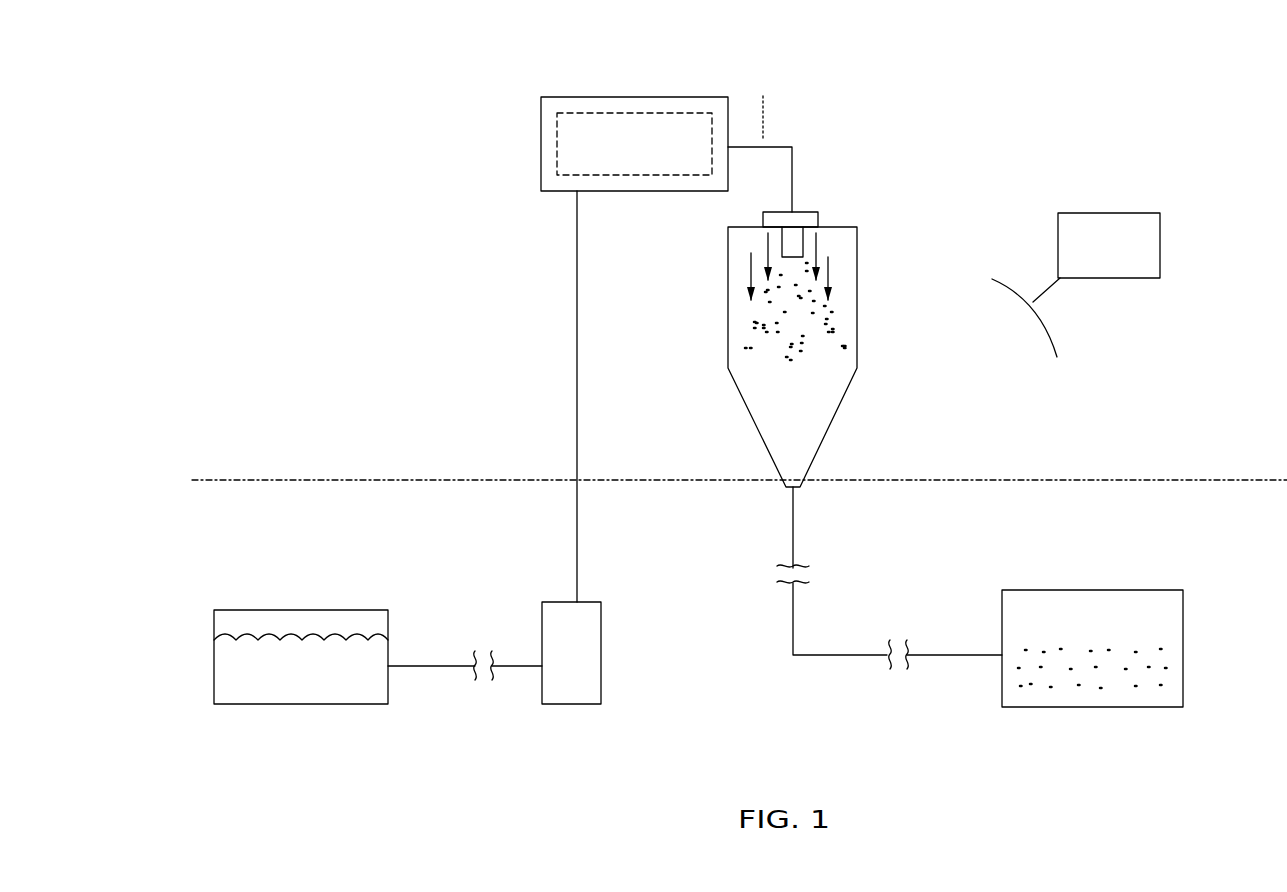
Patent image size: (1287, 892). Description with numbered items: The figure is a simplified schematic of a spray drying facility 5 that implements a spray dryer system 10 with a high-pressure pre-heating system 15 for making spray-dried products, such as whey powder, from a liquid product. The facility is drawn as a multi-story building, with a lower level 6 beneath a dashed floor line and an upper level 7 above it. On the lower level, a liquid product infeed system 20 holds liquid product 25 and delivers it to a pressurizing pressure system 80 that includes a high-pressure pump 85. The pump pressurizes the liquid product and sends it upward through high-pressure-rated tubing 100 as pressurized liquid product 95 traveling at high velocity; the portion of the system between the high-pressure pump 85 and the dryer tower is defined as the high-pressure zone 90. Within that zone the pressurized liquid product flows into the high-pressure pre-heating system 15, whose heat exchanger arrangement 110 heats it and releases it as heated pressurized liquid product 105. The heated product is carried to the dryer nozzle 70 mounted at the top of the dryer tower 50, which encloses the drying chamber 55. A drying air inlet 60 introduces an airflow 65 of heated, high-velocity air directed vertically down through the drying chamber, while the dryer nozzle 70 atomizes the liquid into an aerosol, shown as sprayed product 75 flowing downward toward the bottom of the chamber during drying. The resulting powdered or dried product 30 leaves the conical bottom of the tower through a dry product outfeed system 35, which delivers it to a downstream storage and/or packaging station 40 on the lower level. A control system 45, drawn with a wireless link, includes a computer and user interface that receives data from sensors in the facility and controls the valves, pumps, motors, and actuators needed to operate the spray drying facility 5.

The spray drying facility 5 is at (308, 80).
The lower level 6 is at (298, 537).
The upper level 7 is at (283, 398).
The spray dryer system 10 is at (905, 163).
The high-pressure pre-heating system 15 is at (695, 80).
The liquid product infeed system 20 is at (411, 572).
The liquid product 25 is at (265, 677).
The dried product 30 is at (1095, 687).
The dry product outfeed system 35 is at (905, 578).
The storage and/or packaging station 40 is at (1130, 580).
The control system 45 is at (1113, 190).
The dryer tower 50 is at (705, 380).
The drying chamber 55 is at (733, 328).
The drying air inlet 60 is at (763, 213).
The airflow 65 is at (837, 265).
The dryer nozzle 70 is at (793, 245).
The sprayed product 75 is at (815, 335).
The pressurizing pressure system 80 is at (623, 675).
The high-pressure pump 85 is at (590, 633).
The high-pressure zone 90 is at (531, 253).
The pressurized liquid product 95 is at (565, 473).
The high-pressure-rated tubing 100 is at (792, 157).
The heated pressurized liquid product 105 is at (765, 105).
The heat exchanger arrangement 110 is at (590, 133).